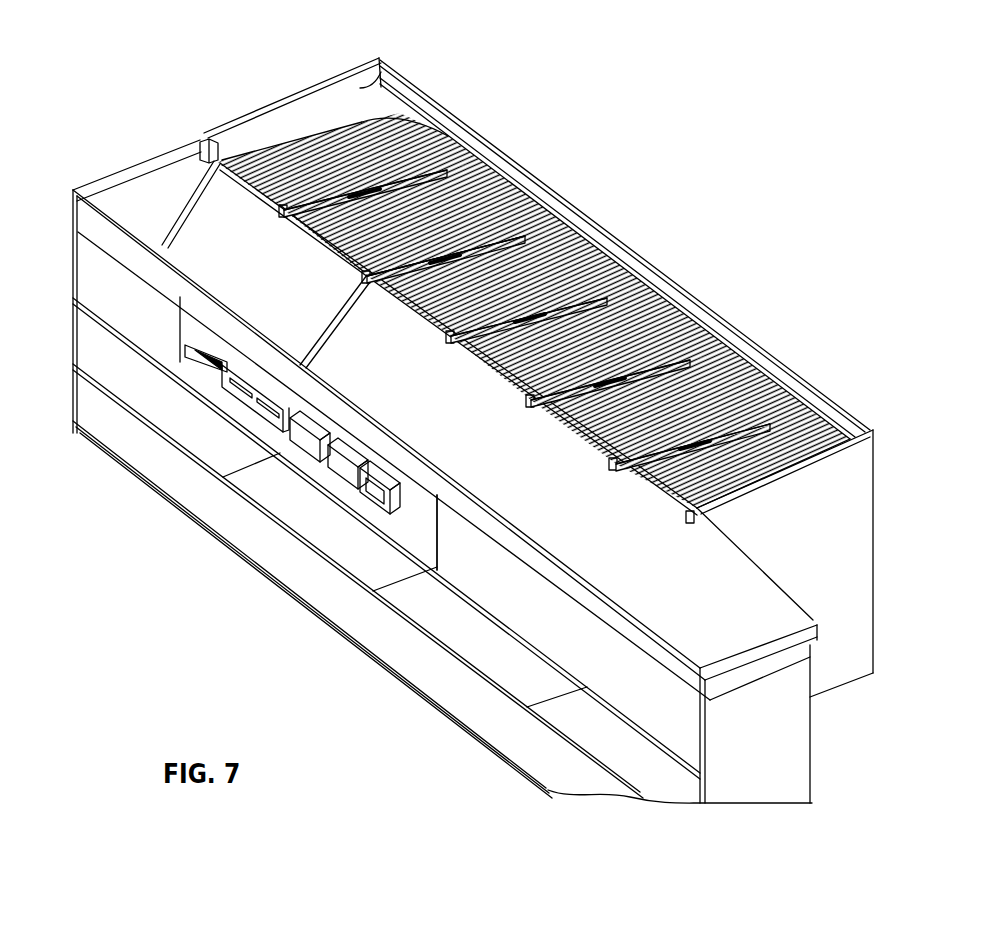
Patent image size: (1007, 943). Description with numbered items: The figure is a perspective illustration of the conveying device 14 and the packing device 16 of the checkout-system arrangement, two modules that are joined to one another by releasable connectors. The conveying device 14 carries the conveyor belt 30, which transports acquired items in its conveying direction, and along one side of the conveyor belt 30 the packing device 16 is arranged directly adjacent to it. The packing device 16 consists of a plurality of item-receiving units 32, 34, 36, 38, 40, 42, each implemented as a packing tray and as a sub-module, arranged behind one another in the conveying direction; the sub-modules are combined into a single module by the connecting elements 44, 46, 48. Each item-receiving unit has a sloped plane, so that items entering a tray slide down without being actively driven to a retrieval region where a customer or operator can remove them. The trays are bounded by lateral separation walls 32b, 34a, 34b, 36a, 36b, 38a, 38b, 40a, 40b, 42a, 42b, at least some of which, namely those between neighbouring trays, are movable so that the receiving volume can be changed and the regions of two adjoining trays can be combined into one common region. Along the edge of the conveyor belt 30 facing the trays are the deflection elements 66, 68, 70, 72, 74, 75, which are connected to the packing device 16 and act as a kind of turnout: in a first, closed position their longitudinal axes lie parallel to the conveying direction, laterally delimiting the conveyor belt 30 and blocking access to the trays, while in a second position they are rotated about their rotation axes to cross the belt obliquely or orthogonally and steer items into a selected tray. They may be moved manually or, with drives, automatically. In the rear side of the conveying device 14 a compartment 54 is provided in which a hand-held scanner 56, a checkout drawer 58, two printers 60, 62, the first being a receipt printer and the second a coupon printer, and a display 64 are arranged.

The conveying device 14 is at (832, 797).
The packing device 16 is at (742, 222).
The conveyor belt 30 is at (415, 399).
The item-receiving unit 32 is at (767, 457).
The separation wall 32b is at (770, 423).
The item-receiving unit 34 is at (753, 427).
The separation wall 34a is at (807, 427).
The separation wall 34b is at (733, 417).
The item-receiving unit 36 is at (660, 363).
The separation wall 36a is at (730, 397).
The separation wall 36b is at (637, 330).
The item-receiving unit 38 is at (560, 300).
The separation wall 38a is at (529, 320).
The separation wall 38b is at (555, 262).
The item-receiving unit 40 is at (467, 216).
The separation wall 40a is at (490, 250).
The separation wall 40b is at (468, 172).
The item-receiving unit 42 is at (397, 170).
The separation wall 42a is at (423, 190).
The separation wall 42b is at (385, 125).
The connecting element 44 is at (537, 220).
The connecting element 46 is at (293, 92).
The connecting element 48 is at (825, 572).
The compartment 54 is at (437, 535).
The hand-held scanner 56 is at (205, 368).
The checkout drawer 58 is at (242, 400).
The printer 60 is at (296, 446).
The printer 62 is at (336, 468).
The display 64 is at (372, 494).
The deflection element 66 is at (204, 187).
The deflection element 68 is at (312, 243).
The deflection element 70 is at (337, 323).
The deflection element 72 is at (483, 356).
The deflection element 74 is at (552, 414).
The deflection element 75 is at (638, 495).